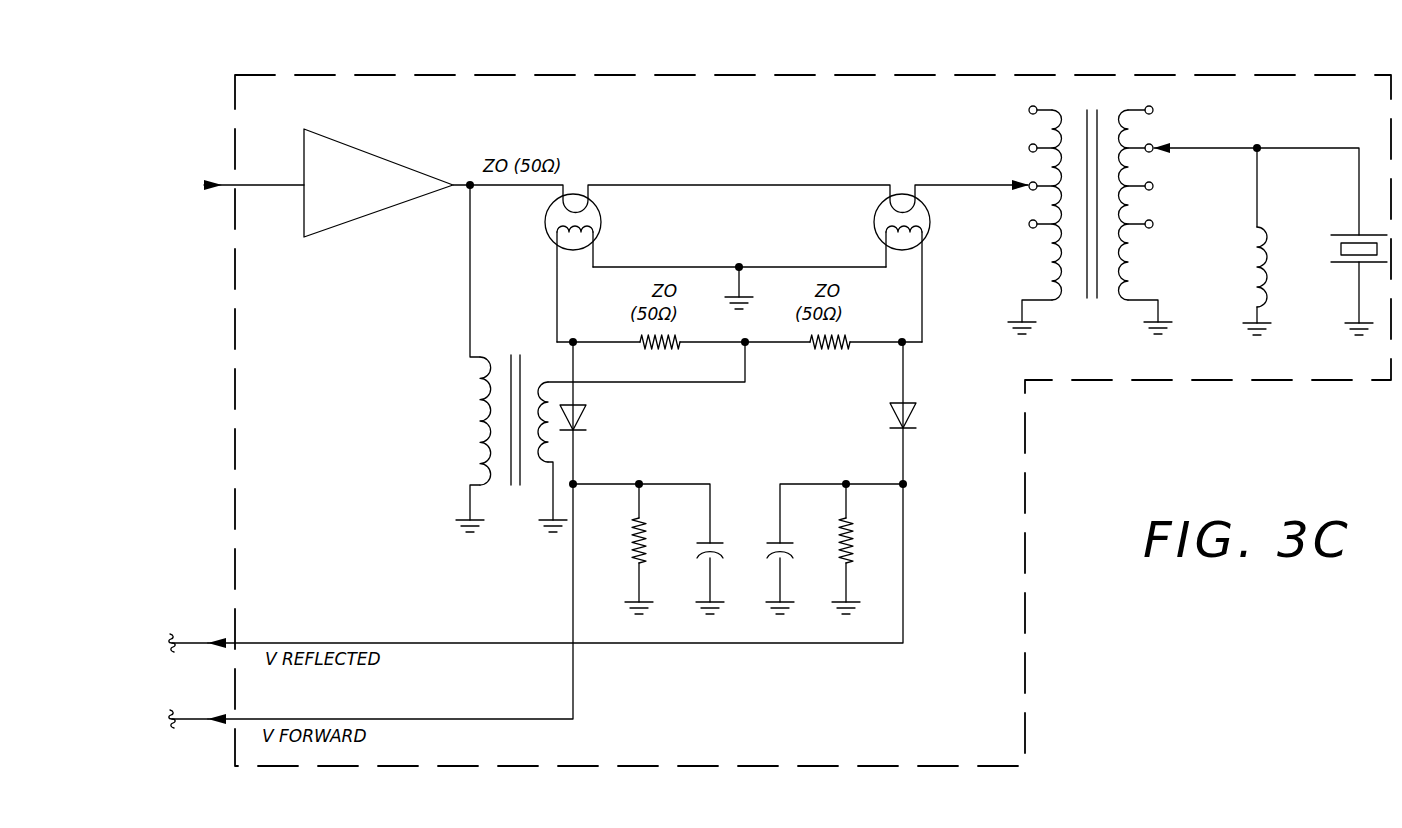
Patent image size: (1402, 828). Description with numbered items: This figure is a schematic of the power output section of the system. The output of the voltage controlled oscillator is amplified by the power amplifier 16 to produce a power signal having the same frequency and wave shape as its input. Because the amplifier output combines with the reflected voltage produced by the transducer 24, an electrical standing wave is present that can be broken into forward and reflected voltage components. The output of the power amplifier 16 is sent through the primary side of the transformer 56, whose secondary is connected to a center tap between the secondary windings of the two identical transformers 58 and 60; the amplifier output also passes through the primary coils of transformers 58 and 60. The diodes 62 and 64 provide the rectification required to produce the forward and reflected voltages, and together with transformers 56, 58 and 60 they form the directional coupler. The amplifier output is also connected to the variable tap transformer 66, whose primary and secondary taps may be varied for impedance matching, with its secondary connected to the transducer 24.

The power amplifier 16 is at (370, 153).
The transducer 24 is at (1350, 268).
The transformer 56 is at (470, 427).
The transformer 58 is at (601, 222).
The transformer 60 is at (930, 224).
The diode 62 is at (588, 418).
The diode 64 is at (915, 416).
The variable tap transformer 66 is at (1031, 145).